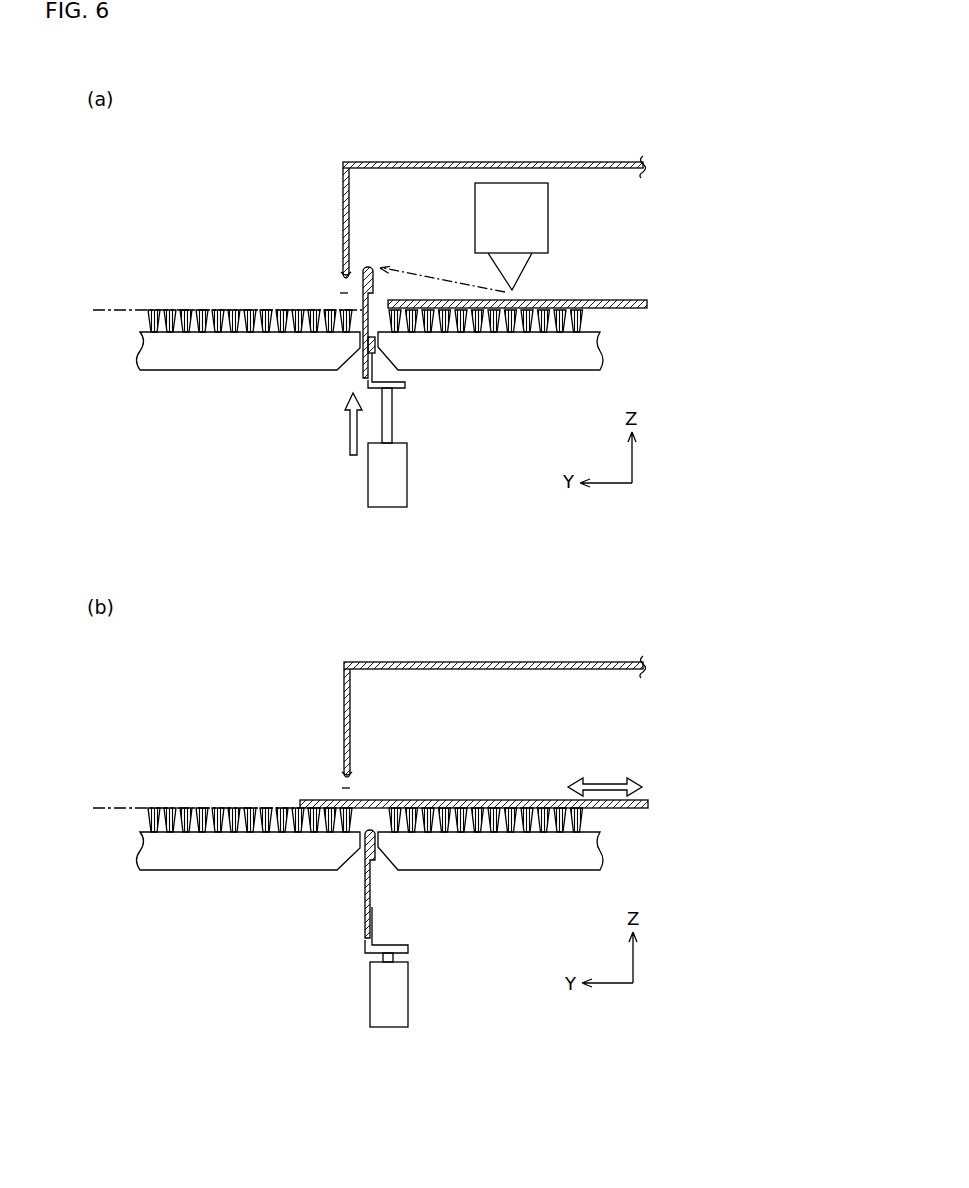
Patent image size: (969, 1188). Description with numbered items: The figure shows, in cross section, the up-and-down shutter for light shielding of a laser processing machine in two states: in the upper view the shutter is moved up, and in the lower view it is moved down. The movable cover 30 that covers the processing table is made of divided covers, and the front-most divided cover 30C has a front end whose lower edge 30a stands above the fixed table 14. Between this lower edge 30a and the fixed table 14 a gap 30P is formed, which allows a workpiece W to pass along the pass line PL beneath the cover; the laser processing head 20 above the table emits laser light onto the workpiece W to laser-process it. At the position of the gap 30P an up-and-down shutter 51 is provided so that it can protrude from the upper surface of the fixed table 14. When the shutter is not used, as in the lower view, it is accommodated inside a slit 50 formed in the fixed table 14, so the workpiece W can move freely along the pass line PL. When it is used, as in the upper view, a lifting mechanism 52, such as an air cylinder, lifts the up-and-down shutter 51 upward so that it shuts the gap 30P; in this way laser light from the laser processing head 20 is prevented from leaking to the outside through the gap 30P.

The front-most divided cover 30C is at (463, 161).
The movable cover 30 is at (494, 429).
The lower edge 30a is at (370, 265).
The gap 30P is at (342, 295).
The pass line PL is at (107, 305).
The fixed table 14 is at (250, 370).
The workpiece W is at (587, 298).
The laser processing head 20 is at (533, 200).
The up-and-down shutter 51 is at (342, 278).
The slit 50 is at (375, 338).
The lifting mechanism 52 is at (398, 482).